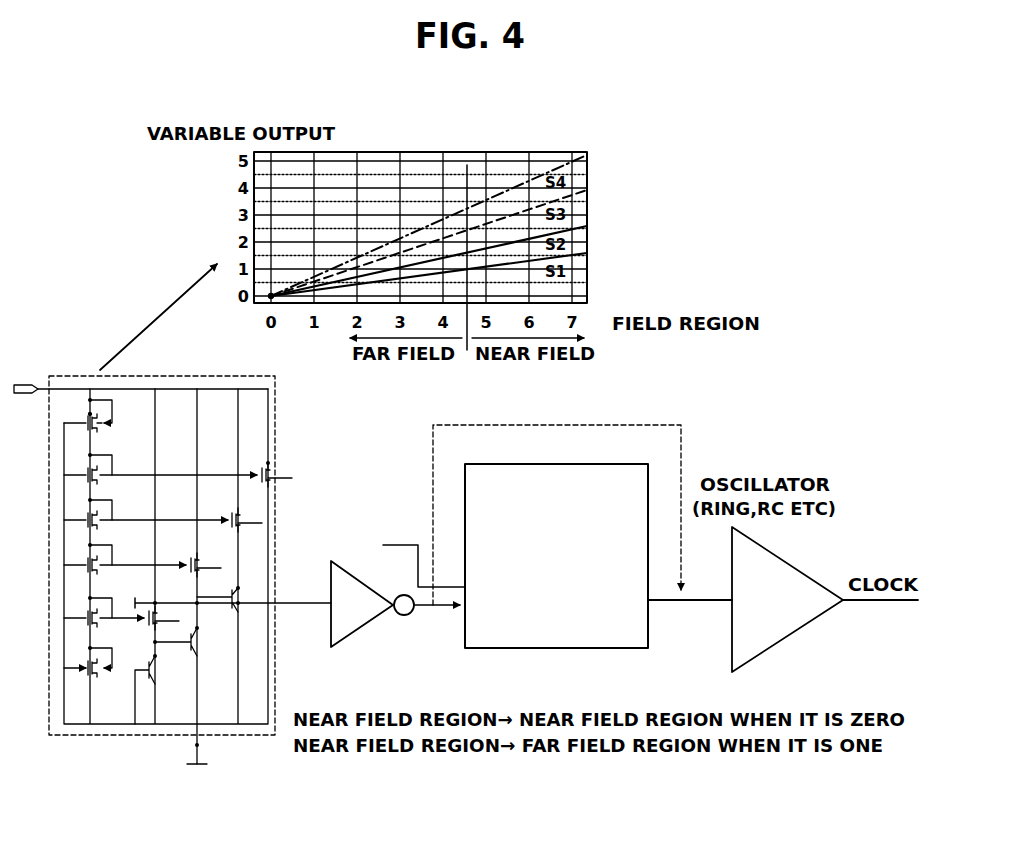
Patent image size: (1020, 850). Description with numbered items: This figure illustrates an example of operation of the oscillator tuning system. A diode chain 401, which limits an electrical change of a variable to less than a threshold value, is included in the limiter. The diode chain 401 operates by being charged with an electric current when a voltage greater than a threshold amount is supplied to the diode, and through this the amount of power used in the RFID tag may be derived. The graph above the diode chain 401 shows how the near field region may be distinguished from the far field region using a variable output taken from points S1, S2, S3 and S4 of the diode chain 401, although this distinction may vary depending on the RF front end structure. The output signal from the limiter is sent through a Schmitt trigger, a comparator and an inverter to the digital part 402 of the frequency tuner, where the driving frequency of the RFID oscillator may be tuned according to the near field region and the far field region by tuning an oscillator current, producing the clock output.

The diode chain 401 is at (172, 593).
The digital part 402 is at (557, 464).
The point S1 of the diode chain S1 is at (133, 613).
The point S2 of the diode chain S2 is at (154, 560).
The point S3 of the diode chain S3 is at (175, 515).
The point S4 of the diode chain S4 is at (190, 470).